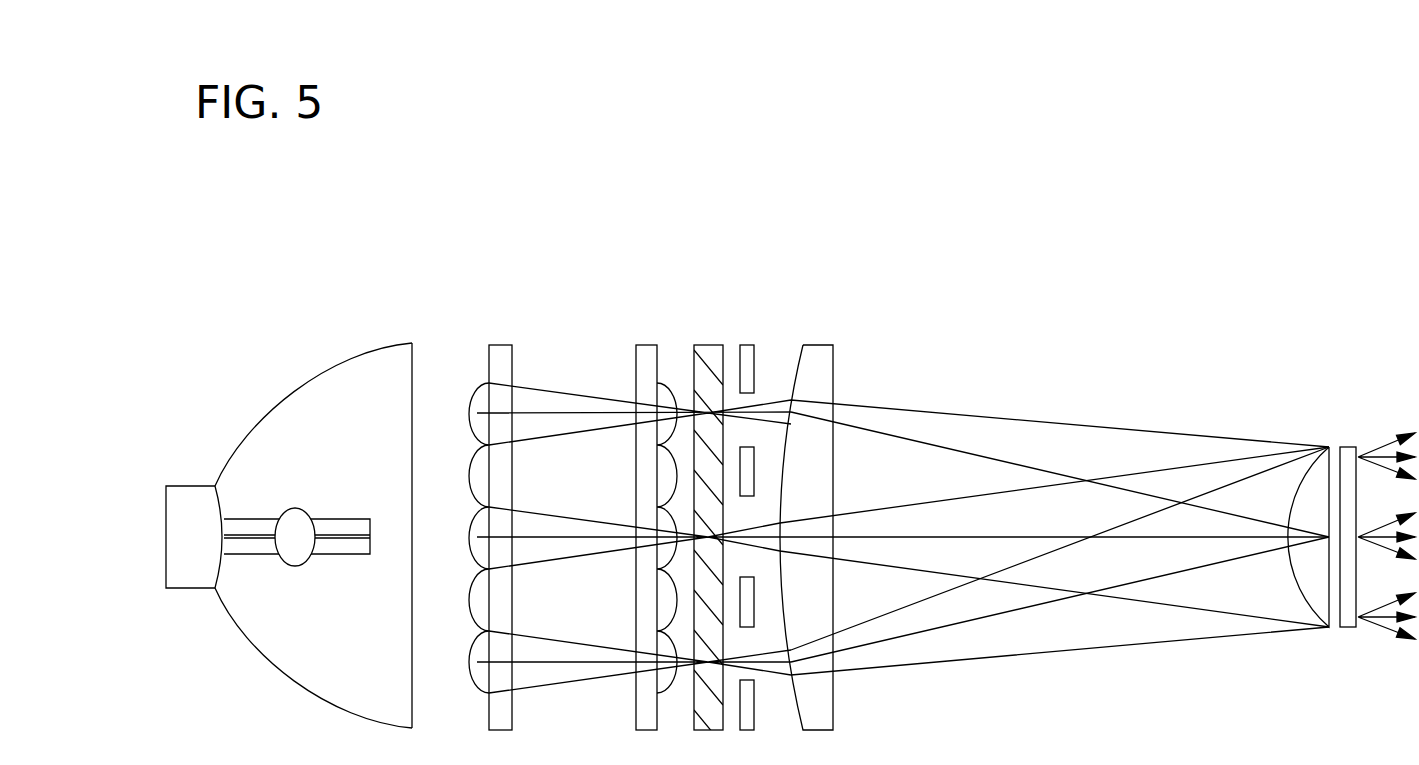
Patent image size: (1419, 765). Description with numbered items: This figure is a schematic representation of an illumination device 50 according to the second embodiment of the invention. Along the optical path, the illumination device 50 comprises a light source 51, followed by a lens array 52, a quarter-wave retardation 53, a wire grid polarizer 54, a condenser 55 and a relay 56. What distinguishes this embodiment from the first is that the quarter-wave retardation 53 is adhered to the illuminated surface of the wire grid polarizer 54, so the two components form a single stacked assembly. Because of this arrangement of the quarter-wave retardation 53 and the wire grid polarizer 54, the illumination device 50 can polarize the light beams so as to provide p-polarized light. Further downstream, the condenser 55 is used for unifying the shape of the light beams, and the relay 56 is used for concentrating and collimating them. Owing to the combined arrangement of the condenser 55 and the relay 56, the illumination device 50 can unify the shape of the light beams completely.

The illumination device 50 is at (985, 222).
The light source 51 is at (336, 304).
The lens array 52 is at (500, 343).
The quarter-wave retardation 53 is at (647, 343).
The wire grid polarizer 54 is at (704, 348).
The condenser 55 is at (819, 343).
The relay 56 is at (1308, 412).